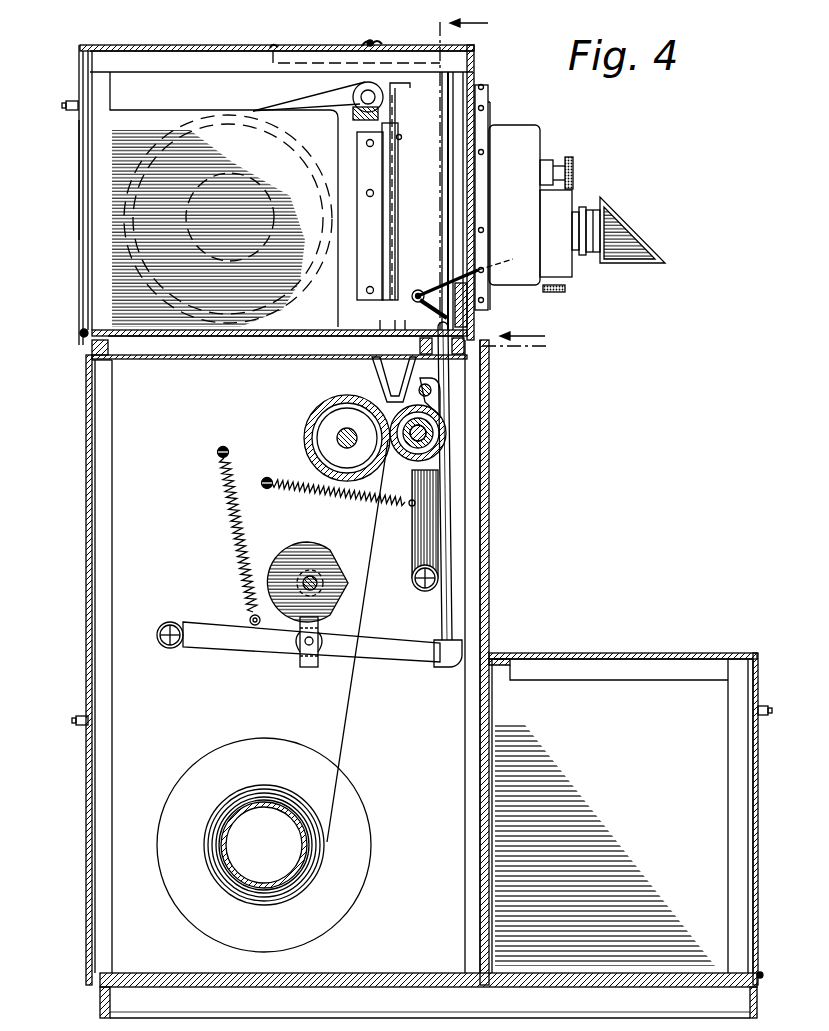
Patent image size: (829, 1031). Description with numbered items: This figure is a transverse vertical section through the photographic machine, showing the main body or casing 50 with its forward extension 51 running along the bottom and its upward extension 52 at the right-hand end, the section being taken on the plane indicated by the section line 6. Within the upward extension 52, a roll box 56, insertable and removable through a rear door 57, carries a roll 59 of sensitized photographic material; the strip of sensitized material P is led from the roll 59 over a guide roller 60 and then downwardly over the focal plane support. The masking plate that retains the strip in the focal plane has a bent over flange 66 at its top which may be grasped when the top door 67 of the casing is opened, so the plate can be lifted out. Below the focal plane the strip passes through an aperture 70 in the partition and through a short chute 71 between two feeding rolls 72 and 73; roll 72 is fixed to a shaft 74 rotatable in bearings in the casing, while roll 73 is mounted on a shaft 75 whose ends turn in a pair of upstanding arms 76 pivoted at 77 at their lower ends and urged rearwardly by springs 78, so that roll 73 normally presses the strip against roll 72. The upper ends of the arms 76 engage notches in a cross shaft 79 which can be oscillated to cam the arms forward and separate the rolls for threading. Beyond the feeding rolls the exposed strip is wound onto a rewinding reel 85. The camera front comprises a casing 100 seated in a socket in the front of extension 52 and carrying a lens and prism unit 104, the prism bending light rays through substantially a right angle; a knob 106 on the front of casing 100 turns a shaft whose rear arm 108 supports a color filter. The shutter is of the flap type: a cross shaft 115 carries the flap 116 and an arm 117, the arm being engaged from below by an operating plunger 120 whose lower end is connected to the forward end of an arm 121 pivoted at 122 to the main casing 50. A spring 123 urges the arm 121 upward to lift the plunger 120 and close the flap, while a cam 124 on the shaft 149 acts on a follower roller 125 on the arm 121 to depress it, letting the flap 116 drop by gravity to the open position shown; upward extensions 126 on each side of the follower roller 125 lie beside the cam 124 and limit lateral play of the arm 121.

The main body or casing 50 is at (484, 560).
The forward extension 51 is at (636, 654).
The upward extension 52 is at (205, 44).
The roll box 56 is at (178, 118).
The rear door 57 is at (76, 160).
The roll of sensitized photographic material 59 is at (290, 146).
The guide roller 60 is at (355, 104).
The bent over flange 66 is at (398, 88).
The top door 67 is at (326, 33).
The section line 6 is at (494, 180).
The aperture 70 is at (390, 337).
The short chute 71 is at (375, 366).
The feeding roll 72 is at (320, 415).
The feeding roll 73 is at (443, 450).
The shaft 74 is at (338, 438).
The shaft 75 is at (445, 433).
The upstanding arms 76 is at (412, 535).
The pivot 77 is at (420, 592).
The springs 78 is at (312, 498).
The cross shaft 79 is at (440, 392).
The rewinding reel 85 is at (362, 792).
The casing 100 is at (510, 133).
The lens and prism unit 104 is at (622, 232).
The knob 106 is at (572, 170).
The arm 108 is at (562, 292).
The cross shaft 115 is at (428, 278).
The flap 116 is at (442, 275).
The arm 117 is at (450, 310).
The operating plunger or rod 120 is at (452, 605).
The arm 121 is at (385, 672).
The pivot 122 is at (178, 620).
The spring 123 is at (232, 488).
The cam 124 is at (335, 548).
The follower roller 125 is at (298, 645).
The upward extensions 126 is at (316, 625).
The shaft 149 is at (312, 576).
The strip of sensitized material P is at (348, 720).